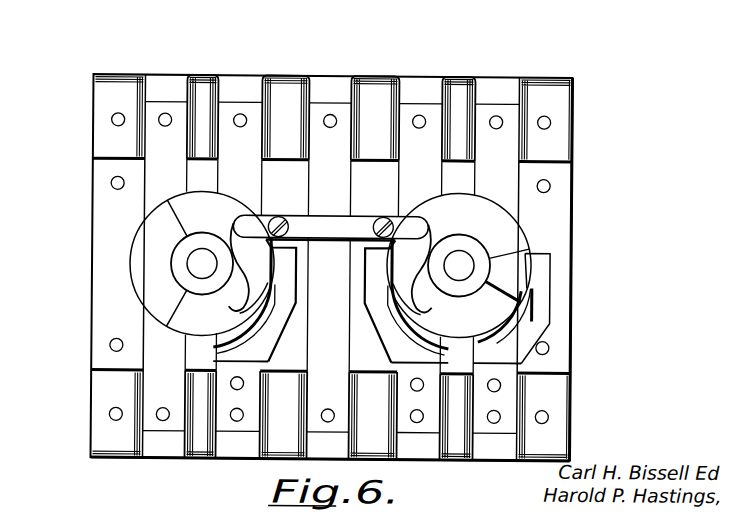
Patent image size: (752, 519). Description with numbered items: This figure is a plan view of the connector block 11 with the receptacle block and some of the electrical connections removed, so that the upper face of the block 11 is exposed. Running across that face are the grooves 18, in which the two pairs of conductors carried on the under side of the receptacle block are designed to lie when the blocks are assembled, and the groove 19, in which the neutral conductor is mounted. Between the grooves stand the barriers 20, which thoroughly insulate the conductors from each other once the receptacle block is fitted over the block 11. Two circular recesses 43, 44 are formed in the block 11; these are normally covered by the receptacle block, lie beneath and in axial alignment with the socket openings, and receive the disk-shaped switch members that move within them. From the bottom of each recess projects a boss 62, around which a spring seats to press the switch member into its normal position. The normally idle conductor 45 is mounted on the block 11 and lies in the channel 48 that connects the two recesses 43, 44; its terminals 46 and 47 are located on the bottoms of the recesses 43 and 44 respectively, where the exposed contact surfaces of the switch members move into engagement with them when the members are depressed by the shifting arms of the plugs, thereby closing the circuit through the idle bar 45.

The block 11 is at (97, 214).
The grooves 18 is at (245, 107).
The groove 19 is at (327, 108).
The barriers 20 is at (443, 84).
The recess 43 is at (222, 206).
The recess 44 is at (483, 210).
The normally idle conductor 45 is at (348, 233).
The terminal 46 is at (240, 294).
The terminal 47 is at (420, 309).
The channel 48 is at (322, 215).
The bosses 62 is at (197, 263).